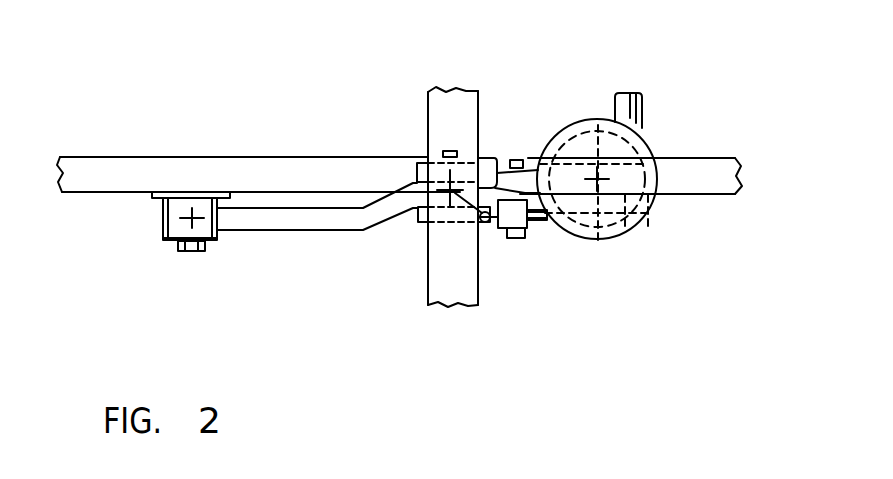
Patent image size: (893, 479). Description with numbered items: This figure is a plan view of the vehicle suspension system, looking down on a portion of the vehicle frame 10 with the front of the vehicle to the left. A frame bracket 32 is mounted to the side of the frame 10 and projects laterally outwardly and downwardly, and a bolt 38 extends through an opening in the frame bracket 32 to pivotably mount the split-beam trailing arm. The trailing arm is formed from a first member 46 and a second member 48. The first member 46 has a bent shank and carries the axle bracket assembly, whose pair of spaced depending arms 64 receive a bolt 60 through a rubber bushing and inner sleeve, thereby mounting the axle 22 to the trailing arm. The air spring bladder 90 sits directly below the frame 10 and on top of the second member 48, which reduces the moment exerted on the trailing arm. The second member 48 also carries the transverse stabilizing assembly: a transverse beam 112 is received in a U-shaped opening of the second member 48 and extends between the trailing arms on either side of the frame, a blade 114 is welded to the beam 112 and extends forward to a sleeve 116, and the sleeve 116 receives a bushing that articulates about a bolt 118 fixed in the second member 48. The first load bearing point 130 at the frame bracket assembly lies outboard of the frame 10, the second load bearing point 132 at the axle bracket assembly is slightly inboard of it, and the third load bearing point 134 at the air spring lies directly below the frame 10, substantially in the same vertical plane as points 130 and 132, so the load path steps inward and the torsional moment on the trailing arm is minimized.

The vehicle frame 10 is at (102, 157).
The axle 22 is at (428, 92).
The frame bracket 32 is at (163, 218).
The bolt 38 is at (192, 252).
The first member 46 is at (285, 230).
The second member 48 is at (497, 177).
The bolt 60 is at (450, 160).
The depending arms 64 is at (420, 220).
The air spring bladder 90 is at (603, 117).
The transverse beam 112 is at (643, 115).
The blade 114 is at (600, 240).
The sleeve 116 is at (533, 223).
The bolt 118 is at (517, 238).
The first load bearing point 130 is at (192, 214).
The second load bearing point 132 is at (487, 222).
The third load bearing point 134 is at (650, 213).